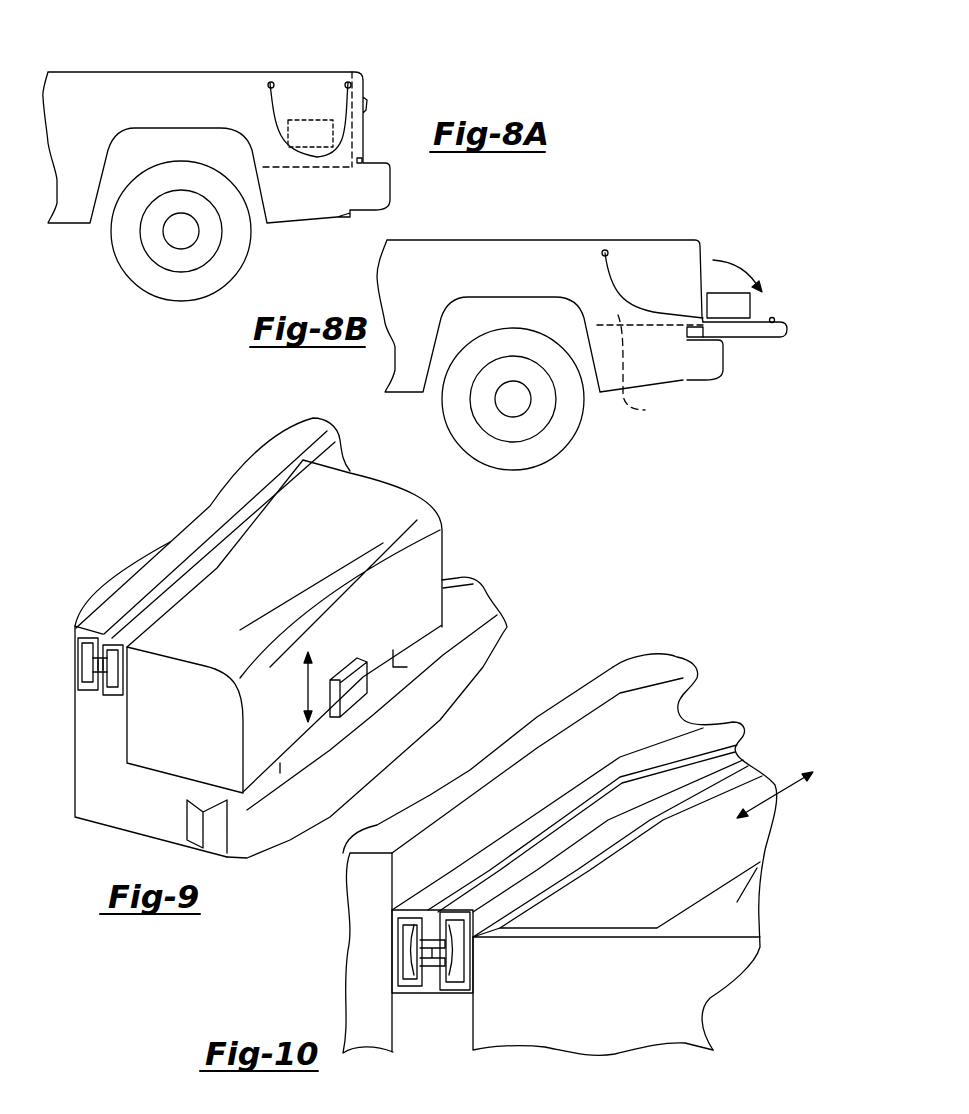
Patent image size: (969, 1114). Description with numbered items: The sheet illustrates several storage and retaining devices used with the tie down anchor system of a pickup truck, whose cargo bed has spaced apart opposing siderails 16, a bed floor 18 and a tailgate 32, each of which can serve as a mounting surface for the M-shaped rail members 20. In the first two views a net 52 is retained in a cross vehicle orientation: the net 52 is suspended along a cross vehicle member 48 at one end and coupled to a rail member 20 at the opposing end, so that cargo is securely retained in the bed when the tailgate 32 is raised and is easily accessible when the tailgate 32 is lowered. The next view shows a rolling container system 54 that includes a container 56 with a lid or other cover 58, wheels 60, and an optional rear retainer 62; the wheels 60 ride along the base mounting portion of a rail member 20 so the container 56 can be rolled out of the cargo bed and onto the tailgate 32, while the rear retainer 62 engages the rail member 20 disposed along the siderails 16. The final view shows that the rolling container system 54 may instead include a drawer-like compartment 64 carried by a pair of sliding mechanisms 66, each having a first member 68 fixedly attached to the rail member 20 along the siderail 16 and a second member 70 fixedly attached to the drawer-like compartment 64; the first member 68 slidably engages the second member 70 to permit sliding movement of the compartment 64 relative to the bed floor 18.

In FIG. 8B, the siderails 16 is at (660, 240).
In FIG. 8B, the bed floor 18 is at (646, 369).
In FIG. 8A, the rail members 20 is at (362, 83).
In FIG. 8B, the rail members 20 is at (772, 320).
In FIG. 8B, the tailgate 32 is at (757, 337).
In FIG. 8A, the cross vehicle member 48 is at (270, 76).
In FIG. 8A, the net 52 is at (270, 108).
In FIG. 9, the rolling container system 54 is at (468, 520).
In FIG. 10, the rolling container system 54 is at (751, 686).
In FIG. 9, the container 56 is at (180, 745).
In FIG. 9, the cover 58 is at (278, 623).
In FIG. 9, the wheels 60 is at (212, 800).
In FIG. 9, the rear retainer 62 is at (360, 667).
In FIG. 10, the drawer-like compartment 64 is at (737, 897).
In FIG. 10, the sliding mechanism 66 is at (657, 740).
In FIG. 10, the first member 68 is at (395, 940).
In FIG. 10, the second member 70 is at (453, 993).